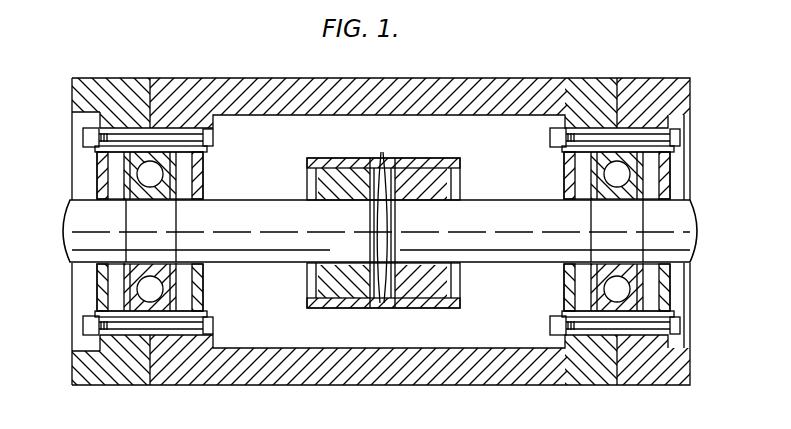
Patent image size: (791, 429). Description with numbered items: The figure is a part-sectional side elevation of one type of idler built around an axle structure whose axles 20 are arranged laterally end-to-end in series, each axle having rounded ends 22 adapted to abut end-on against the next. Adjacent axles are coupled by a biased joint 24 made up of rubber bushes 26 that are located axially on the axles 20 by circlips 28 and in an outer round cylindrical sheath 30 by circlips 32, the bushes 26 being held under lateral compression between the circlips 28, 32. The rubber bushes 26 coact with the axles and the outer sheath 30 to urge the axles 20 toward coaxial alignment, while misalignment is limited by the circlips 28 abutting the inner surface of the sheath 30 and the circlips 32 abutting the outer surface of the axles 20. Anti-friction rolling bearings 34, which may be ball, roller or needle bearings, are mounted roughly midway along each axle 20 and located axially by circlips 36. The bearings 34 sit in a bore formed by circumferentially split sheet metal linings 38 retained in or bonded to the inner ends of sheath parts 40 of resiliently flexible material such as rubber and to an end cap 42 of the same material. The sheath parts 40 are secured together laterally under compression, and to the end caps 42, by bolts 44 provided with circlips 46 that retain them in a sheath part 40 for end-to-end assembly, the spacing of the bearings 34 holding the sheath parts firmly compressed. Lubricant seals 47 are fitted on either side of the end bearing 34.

The axle 20 is at (235, 225).
The rounded end 22 is at (382, 157).
The biased joint 24 is at (384, 235).
The rubber bush 26 is at (332, 176).
The circlip 28 is at (380, 303).
The outer round cylindrical sheath 30 is at (419, 306).
The circlip 32 is at (315, 297).
The anti-friction rolling bearing 34 is at (168, 189).
The circlip 36 is at (643, 225).
The sheet metal lining 38 is at (100, 155).
The sheath part 40 is at (381, 227).
The end cap 42 is at (86, 79).
The bolt 44 is at (207, 122).
The circlip 46 is at (167, 97).
The lubricant seal 47 is at (100, 285).